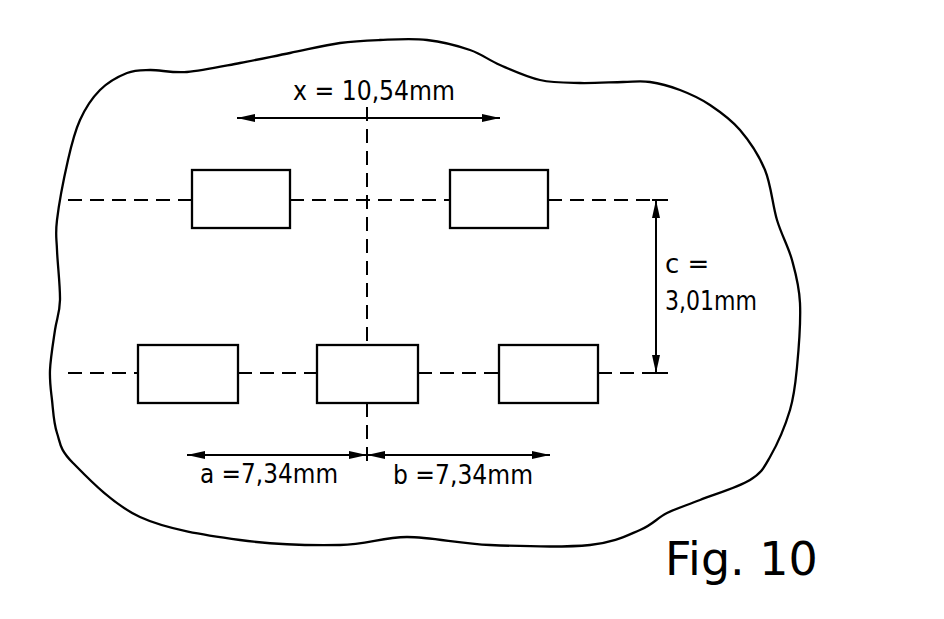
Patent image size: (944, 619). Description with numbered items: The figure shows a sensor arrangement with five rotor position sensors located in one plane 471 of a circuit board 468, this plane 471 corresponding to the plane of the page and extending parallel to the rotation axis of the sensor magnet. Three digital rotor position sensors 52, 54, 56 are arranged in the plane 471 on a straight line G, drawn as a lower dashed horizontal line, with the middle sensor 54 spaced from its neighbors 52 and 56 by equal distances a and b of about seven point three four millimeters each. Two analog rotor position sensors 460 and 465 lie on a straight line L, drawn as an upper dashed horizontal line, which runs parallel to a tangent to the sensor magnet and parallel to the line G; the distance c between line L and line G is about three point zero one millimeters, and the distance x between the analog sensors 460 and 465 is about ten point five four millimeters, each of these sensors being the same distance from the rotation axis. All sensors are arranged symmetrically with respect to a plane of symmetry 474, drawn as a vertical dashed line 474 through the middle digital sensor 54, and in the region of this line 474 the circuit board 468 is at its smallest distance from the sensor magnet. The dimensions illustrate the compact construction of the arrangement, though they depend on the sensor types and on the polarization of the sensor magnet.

The circuit board 468 is at (618, 103).
The plane of symmetry 474 is at (370, 163).
The analog rotor position sensor 465 is at (192, 190).
The analog rotor position sensor 460 is at (548, 187).
The plane 471 is at (333, 282).
The digital rotor position sensor 52 is at (172, 345).
The digital rotor position sensor 54 is at (383, 345).
The digital rotor position sensor 56 is at (562, 345).
The straight line L is at (607, 200).
The straight line G is at (625, 373).